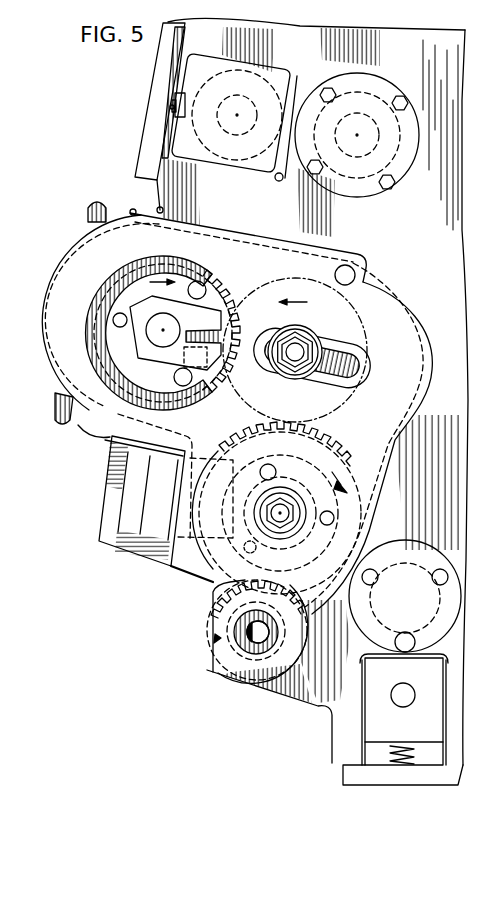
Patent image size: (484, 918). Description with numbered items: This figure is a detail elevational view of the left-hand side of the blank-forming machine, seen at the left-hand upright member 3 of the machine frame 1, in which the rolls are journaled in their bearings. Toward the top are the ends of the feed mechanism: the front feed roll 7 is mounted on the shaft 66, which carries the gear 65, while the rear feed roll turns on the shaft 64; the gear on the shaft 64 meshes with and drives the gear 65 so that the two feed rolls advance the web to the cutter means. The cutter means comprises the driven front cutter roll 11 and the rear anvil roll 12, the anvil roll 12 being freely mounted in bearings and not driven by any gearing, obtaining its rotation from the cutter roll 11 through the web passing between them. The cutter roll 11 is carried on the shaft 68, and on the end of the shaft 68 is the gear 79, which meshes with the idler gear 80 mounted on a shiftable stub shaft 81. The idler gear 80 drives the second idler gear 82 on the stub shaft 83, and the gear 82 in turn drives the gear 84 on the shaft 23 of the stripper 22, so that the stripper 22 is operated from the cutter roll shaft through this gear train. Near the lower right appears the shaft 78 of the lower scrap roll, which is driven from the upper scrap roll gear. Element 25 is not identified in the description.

The machine frame 1 is at (461, 73).
The left-hand upright member 3 is at (455, 101).
The front feed roll 7 is at (249, 178).
The front cutter roll 11 is at (210, 278).
The rear anvil roll 12 is at (362, 341).
The stripper 22 is at (205, 640).
The shaft of the stripper 23 is at (258, 640).
The bushing 25 is at (247, 642).
The shaft of the rear roll 64 is at (362, 118).
The gear 65 is at (172, 88).
The shaft 66 is at (237, 127).
The shaft of the cutter roll 68 is at (165, 337).
The shaft of the lower scrap roll 78 is at (414, 696).
The gear 79 is at (225, 287).
The idler gear 80 is at (348, 307).
The shiftable stub shaft 81 is at (298, 352).
The second idler gear 82 is at (356, 474).
The stub shaft 83 is at (288, 516).
The gear 84 is at (233, 613).